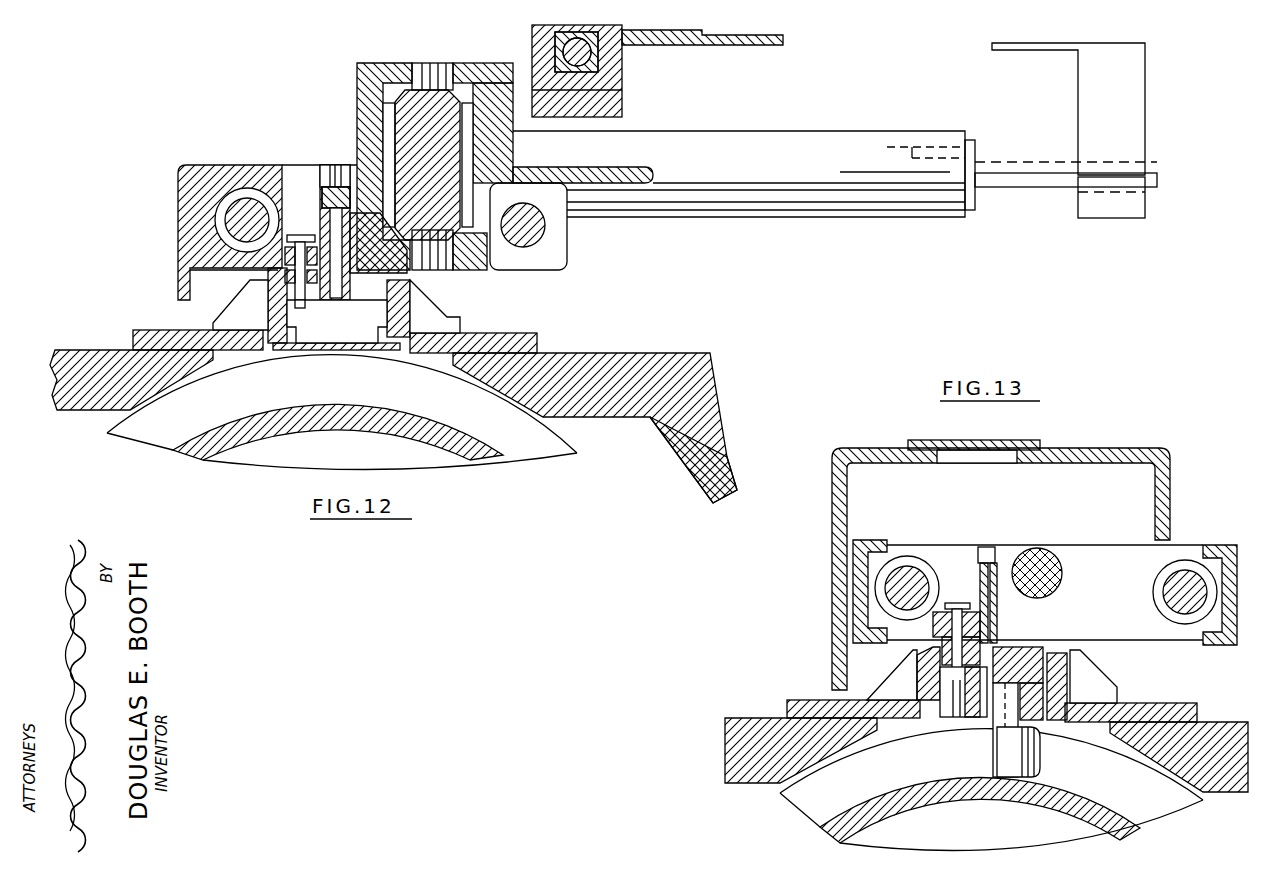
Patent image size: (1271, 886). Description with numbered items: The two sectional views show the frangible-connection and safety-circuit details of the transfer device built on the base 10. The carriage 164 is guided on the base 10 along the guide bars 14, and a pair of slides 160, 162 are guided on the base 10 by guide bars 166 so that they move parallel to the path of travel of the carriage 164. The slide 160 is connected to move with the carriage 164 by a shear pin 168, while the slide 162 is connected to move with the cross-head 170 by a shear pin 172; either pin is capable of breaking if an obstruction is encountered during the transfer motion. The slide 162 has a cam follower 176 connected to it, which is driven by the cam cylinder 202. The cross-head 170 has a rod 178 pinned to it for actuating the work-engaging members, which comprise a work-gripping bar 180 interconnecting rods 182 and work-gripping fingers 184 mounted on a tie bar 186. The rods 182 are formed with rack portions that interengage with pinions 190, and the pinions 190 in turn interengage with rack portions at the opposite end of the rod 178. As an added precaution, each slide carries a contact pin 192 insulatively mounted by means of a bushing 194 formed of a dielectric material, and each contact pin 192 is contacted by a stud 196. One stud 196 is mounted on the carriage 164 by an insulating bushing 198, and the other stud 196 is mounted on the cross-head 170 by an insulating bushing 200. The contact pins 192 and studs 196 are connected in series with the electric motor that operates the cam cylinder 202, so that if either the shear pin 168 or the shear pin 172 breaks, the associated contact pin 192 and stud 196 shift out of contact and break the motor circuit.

In FIG. 12, the base 10 is at (634, 352).
In FIG. 13, the base 10 is at (1213, 719).
In FIG. 12, the guide bars 14 is at (240, 222).
In FIG. 13, the guide bars 14 is at (909, 586).
In FIG. 12, the slide 160 is at (377, 284).
In FIG. 13, the slide 162 is at (1026, 656).
In FIG. 12, the carriage 164 is at (292, 147).
In FIG. 12, the guide bars 166 is at (236, 316).
In FIG. 12, the shear pin 168 is at (400, 268).
In FIG. 13, the cross-head 170 is at (1086, 556).
In FIG. 13, the shear pin 172 is at (988, 620).
In FIG. 13, the cam follower 176 is at (1068, 751).
In FIG. 12, the rod 178 is at (357, 160).
In FIG. 13, the rod 178 is at (1030, 556).
In FIG. 12, the work-gripping bar 180 is at (1056, 47).
In FIG. 12, the rods 182 is at (1042, 178).
In FIG. 12, the work-gripping fingers 184 is at (703, 36).
In FIG. 12, the tie bar 186 is at (606, 106).
In FIG. 12, the pinions 190 is at (453, 176).
In FIG. 12, the contact pin 192 is at (302, 308).
In FIG. 13, the contact pin 192 is at (958, 672).
In FIG. 12, the bushing 194 is at (282, 292).
In FIG. 13, the bushing 194 is at (933, 662).
In FIG. 12, the stud 196 is at (302, 234).
In FIG. 13, the stud 196 is at (957, 602).
In FIG. 12, the insulating bushing 198 is at (284, 258).
In FIG. 13, the insulating bushing 200 is at (936, 622).
In FIG. 12, the cam cylinder 202 is at (354, 436).
In FIG. 13, the cam cylinder 202 is at (1062, 805).